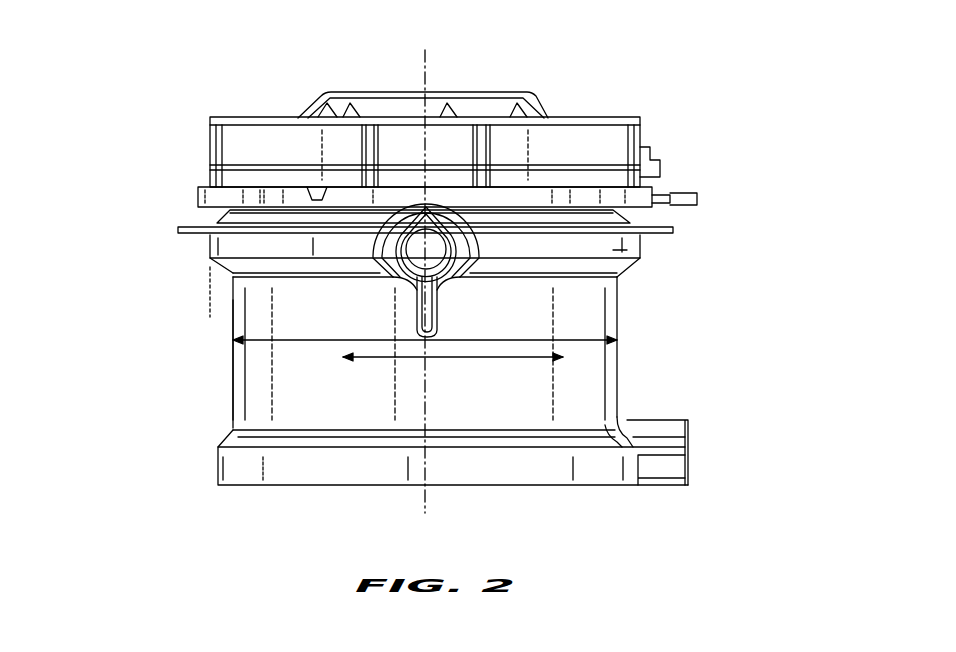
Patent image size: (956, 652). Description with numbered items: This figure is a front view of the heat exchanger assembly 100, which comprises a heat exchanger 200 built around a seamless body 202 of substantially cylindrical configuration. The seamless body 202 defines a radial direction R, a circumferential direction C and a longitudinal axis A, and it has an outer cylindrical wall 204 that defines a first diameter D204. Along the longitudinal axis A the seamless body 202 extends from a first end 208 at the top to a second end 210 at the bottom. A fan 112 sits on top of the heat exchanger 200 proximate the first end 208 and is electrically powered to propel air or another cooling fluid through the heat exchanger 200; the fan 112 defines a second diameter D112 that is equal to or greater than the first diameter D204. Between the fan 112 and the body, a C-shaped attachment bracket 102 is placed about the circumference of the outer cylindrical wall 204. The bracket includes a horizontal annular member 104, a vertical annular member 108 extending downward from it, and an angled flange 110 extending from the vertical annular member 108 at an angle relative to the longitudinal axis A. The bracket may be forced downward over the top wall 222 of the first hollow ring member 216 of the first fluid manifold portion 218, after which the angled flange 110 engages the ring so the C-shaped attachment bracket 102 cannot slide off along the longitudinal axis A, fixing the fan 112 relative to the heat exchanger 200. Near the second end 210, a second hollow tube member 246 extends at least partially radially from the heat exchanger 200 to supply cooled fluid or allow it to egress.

The heat exchanger assembly 100 is at (636, 66).
The fan 112 is at (292, 112).
The second diameter D112 is at (515, 163).
The first end 208 is at (624, 210).
The first hollow ring member 216 is at (345, 181).
The first fluid manifold portion 218 is at (345, 181).
The top wall 222 is at (212, 223).
The horizontal annular member 104 is at (178, 230).
The C-shaped attachment bracket 102 is at (647, 248).
The vertical annular member 108 is at (628, 259).
The angled flange 110 is at (618, 278).
The outer cylindrical wall 204 is at (333, 395).
The heat exchanger 200 is at (179, 360).
The seamless body 202 is at (224, 356).
The first diameter D204 is at (327, 338).
The radial direction R is at (453, 385).
The circumferential direction C is at (484, 360).
The second end 210 is at (602, 487).
The second hollow tube member 246 is at (666, 420).
The longitudinal axis A is at (428, 503).